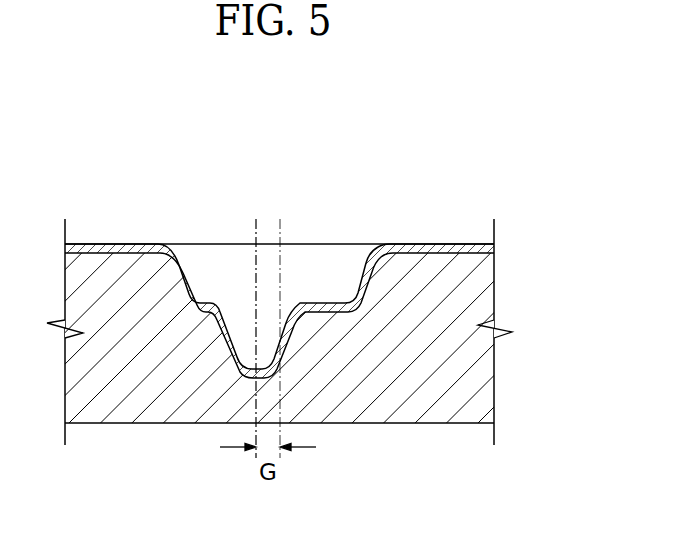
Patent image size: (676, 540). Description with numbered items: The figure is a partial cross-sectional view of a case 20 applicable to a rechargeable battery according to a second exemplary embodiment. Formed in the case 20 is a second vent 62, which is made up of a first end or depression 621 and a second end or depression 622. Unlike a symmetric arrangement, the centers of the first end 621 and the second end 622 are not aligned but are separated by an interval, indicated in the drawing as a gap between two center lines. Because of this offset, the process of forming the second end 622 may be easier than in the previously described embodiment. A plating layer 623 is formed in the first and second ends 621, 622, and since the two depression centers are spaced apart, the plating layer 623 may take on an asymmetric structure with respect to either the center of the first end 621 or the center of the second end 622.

The case 20 is at (470, 294).
The second vent 62 is at (338, 310).
The first end 621 is at (369, 277).
The second end 622 is at (284, 337).
The plating layer 623 is at (383, 248).